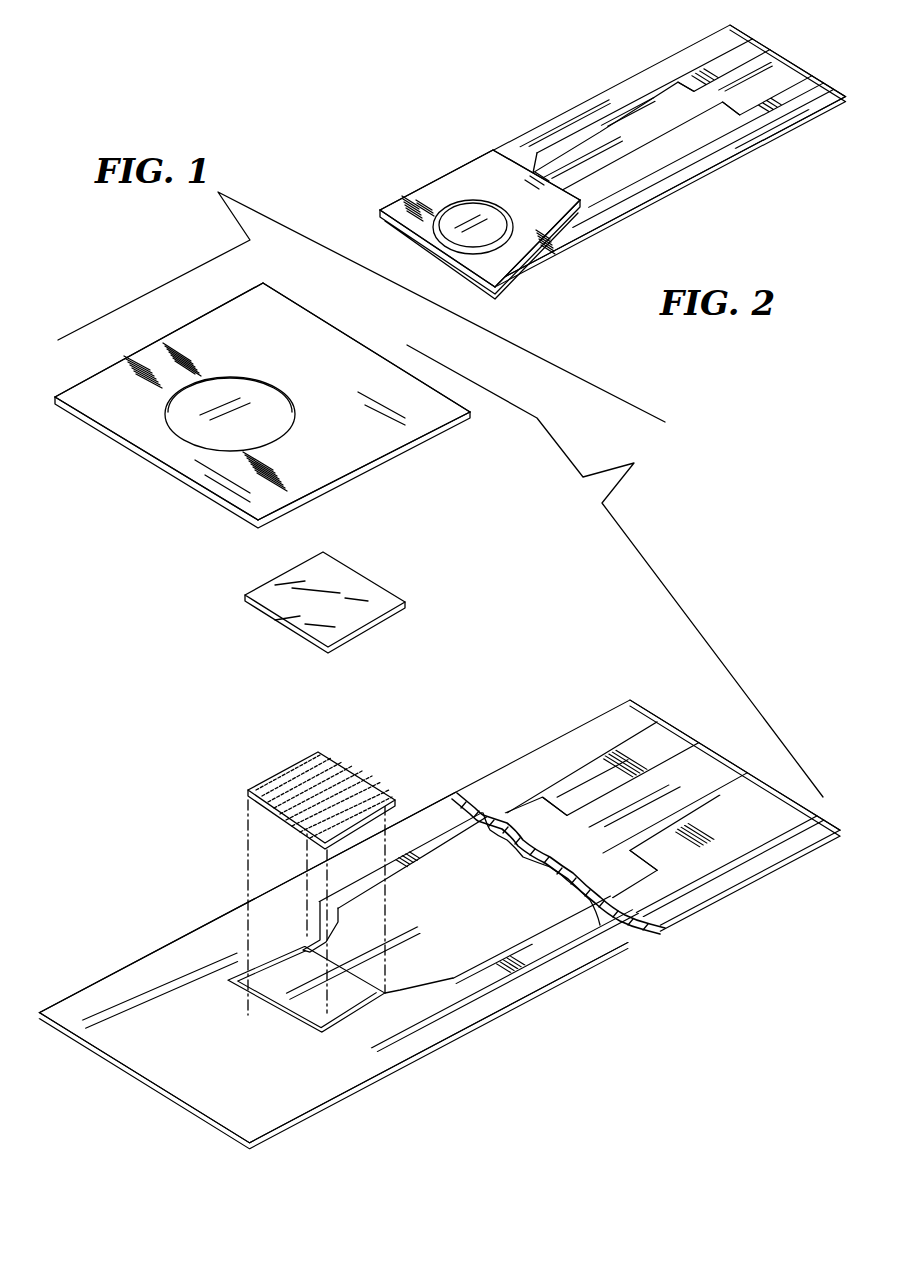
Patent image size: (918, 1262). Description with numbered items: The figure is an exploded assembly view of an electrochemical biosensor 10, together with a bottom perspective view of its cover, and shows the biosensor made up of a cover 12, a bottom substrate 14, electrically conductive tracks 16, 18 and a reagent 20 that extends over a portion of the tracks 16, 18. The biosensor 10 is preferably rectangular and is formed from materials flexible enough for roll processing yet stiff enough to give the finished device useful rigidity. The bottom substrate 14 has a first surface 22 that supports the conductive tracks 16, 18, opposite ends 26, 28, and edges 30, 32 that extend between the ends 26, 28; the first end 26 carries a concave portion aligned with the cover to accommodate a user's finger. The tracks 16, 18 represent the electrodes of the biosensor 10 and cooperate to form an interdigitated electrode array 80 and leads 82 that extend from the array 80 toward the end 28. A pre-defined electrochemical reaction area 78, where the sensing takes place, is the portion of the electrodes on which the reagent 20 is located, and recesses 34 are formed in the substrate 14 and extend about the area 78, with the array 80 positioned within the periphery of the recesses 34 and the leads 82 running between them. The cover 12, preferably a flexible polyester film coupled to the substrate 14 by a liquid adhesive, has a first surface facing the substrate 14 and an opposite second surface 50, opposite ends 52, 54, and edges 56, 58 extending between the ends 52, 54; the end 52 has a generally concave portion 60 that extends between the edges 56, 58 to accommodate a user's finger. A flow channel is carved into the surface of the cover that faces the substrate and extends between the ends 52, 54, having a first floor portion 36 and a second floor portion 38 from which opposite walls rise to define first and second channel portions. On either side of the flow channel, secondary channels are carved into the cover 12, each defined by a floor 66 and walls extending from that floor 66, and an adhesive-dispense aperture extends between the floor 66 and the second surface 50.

In FIG. 1, the electrochemical biosensor 10 is at (440, 494).
In FIG. 2, the electrochemical biosensor 10 is at (477, 127).
In FIG. 1, the cover 12 is at (195, 495).
In FIG. 2, the cover 12 is at (403, 193).
In FIG. 1, the bottom substrate 14 is at (417, 803).
In FIG. 2, the bottom substrate 14 is at (610, 78).
In FIG. 1, the electrically conductive track 16 is at (433, 832).
In FIG. 2, the electrically conductive track 16 is at (643, 88).
In FIG. 1, the electrically conductive track 18 is at (737, 826).
In FIG. 2, the electrically conductive track 18 is at (675, 165).
In FIG. 1, the reagent 20 is at (405, 600).
In FIG. 1, the first surface 22 is at (480, 915).
In FIG. 2, the first surface 22 is at (747, 143).
In FIG. 1, the first end 26 is at (118, 1060).
In FIG. 1, the end 28 is at (723, 758).
In FIG. 2, the end 28 is at (792, 74).
In FIG. 1, the edge 30 is at (480, 1023).
In FIG. 1, the edge 32 is at (223, 917).
In FIG. 1, the recesses 34 is at (290, 1024).
In FIG. 2, the first floor portion 36 is at (590, 230).
In FIG. 2, the second floor portion 38 is at (462, 195).
In FIG. 1, the second surface 50 is at (352, 388).
In FIG. 1, the end 52 is at (123, 447).
In FIG. 2, the end 52 is at (475, 277).
In FIG. 1, the end 54 is at (330, 325).
In FIG. 2, the end 54 is at (503, 158).
In FIG. 1, the edge 56 is at (377, 465).
In FIG. 2, the edge 56 is at (580, 235).
In FIG. 1, the edge 58 is at (144, 350).
In FIG. 2, the edge 58 is at (418, 187).
In FIG. 1, the concave portion 60 is at (222, 406).
In FIG. 2, the concave portion 60 is at (467, 250).
In FIG. 2, the floor 66 is at (485, 183).
In FIG. 1, the electrochemical reaction area 78 is at (287, 1003).
In FIG. 2, the electrochemical reaction area 78 is at (562, 180).
In FIG. 1, the interdigitated electrode array 80 is at (287, 760).
In FIG. 1, the leads 82 is at (508, 803).
In FIG. 2, the leads 82 is at (617, 115).